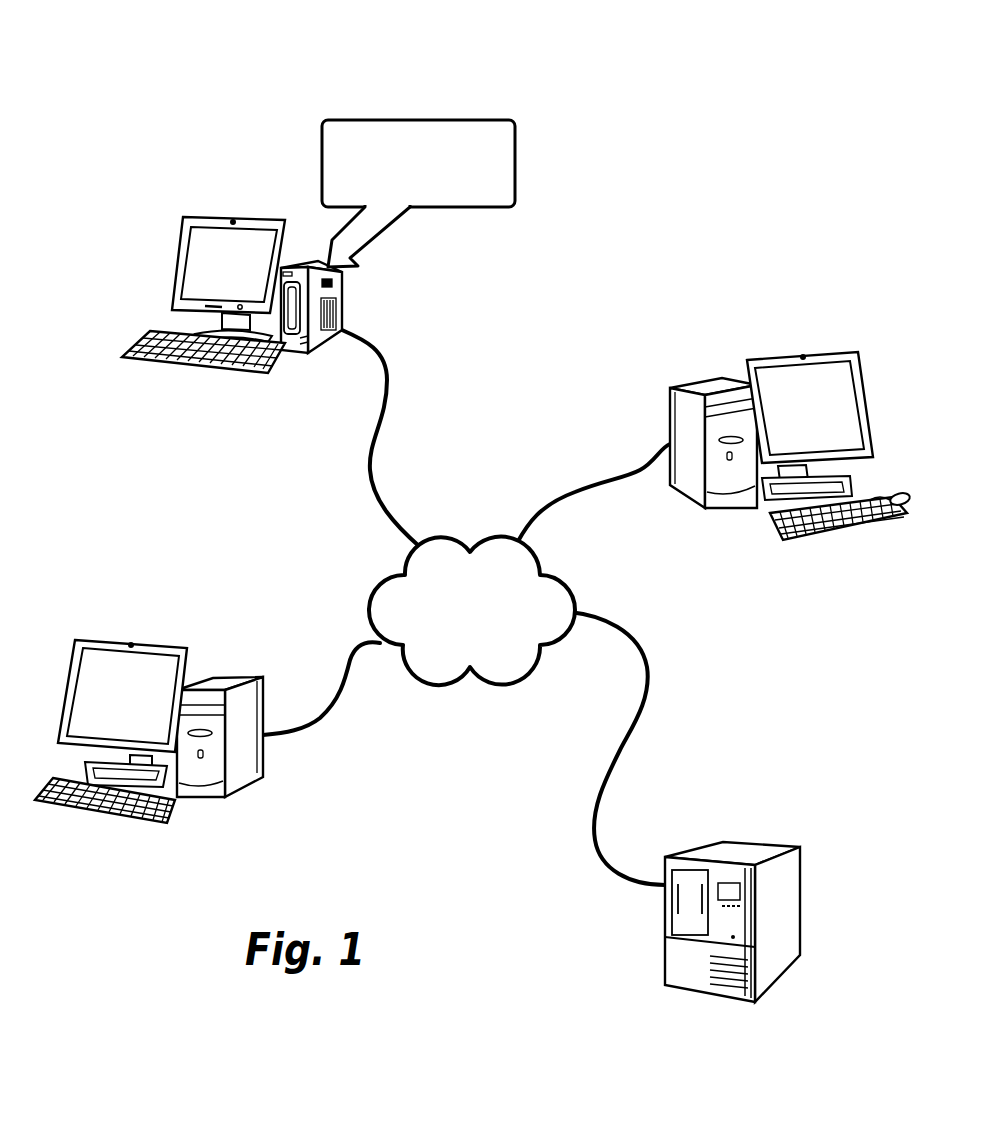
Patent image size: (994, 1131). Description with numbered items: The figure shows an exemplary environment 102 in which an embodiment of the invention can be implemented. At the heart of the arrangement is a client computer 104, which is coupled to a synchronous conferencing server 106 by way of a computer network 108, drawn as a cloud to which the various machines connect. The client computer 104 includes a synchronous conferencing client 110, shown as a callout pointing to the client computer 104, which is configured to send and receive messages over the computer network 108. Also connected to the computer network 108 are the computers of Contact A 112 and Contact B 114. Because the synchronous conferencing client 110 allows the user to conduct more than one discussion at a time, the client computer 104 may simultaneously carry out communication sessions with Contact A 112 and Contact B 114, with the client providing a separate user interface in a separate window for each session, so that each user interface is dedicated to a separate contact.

The environment 102 is at (607, 60).
The client computer 104 is at (181, 249).
The synchronous conferencing server 106 is at (800, 905).
The computer network 108 is at (443, 685).
The synchronous conferencing client 110 is at (515, 160).
The Contact A 112 is at (790, 354).
The Contact B 114 is at (163, 643).